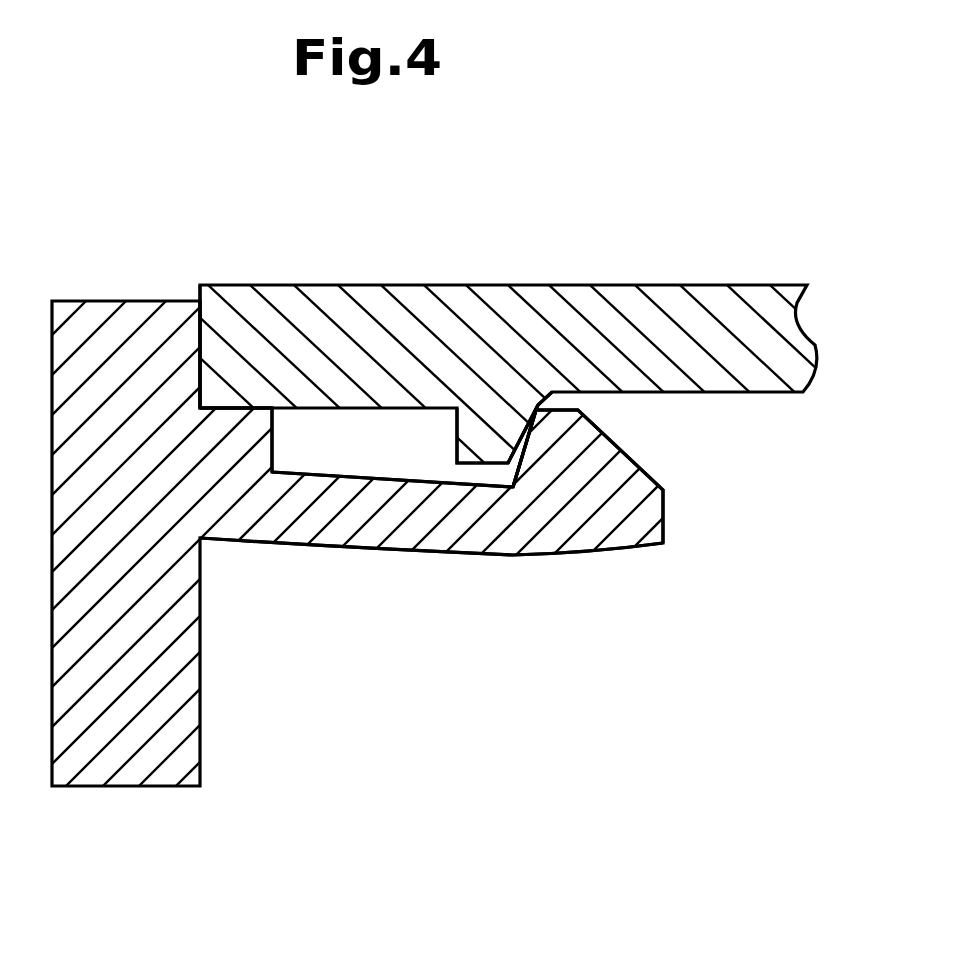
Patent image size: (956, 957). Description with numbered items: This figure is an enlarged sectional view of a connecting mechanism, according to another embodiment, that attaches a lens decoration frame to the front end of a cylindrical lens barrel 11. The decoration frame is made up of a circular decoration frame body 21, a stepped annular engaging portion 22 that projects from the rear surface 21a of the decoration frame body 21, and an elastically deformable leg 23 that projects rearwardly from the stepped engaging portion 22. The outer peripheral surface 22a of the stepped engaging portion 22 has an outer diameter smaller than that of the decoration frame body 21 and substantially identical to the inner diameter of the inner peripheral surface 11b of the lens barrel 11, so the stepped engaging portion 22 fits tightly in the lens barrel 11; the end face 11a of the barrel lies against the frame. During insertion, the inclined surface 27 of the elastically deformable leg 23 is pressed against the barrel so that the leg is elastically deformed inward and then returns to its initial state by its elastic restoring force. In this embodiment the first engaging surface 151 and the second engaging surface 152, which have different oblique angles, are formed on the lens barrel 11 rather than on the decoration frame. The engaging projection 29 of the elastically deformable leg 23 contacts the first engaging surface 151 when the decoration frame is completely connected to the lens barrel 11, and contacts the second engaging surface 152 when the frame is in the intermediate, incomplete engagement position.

The lens barrel 11 is at (353, 320).
The end face of plate member 11a is at (200, 383).
The inner peripheral surface 11b is at (420, 413).
The decoration frame body 21 is at (111, 313).
The rear surface 21a is at (200, 340).
The stepped engaging portion 22 is at (248, 432).
The outer peripheral surface 22a is at (262, 408).
The elastically deformable leg 23 is at (417, 527).
The inclined surface 27 is at (663, 490).
The engaging projection 29 is at (538, 400).
The first engaging surface 151 is at (532, 420).
The second engaging surface 152 is at (522, 470).